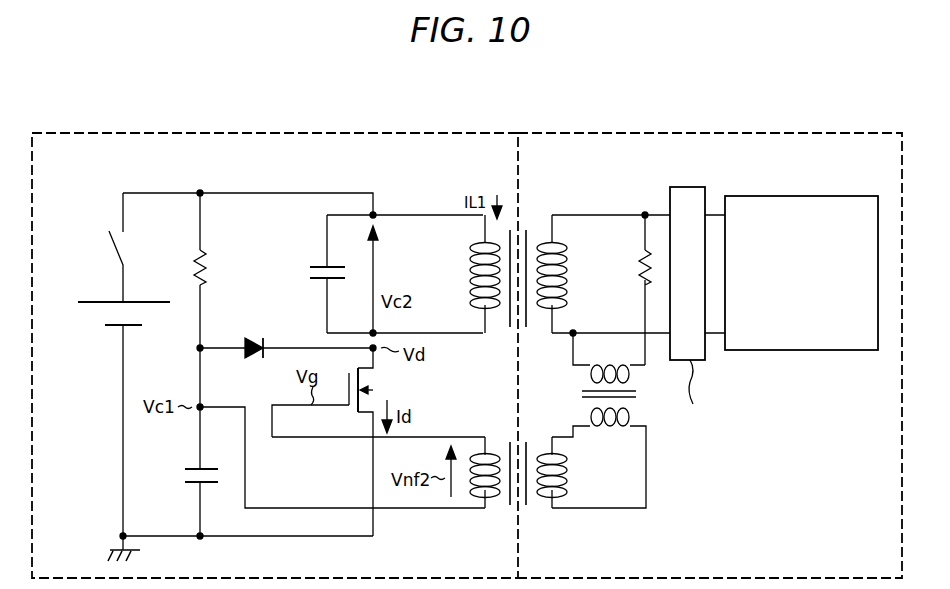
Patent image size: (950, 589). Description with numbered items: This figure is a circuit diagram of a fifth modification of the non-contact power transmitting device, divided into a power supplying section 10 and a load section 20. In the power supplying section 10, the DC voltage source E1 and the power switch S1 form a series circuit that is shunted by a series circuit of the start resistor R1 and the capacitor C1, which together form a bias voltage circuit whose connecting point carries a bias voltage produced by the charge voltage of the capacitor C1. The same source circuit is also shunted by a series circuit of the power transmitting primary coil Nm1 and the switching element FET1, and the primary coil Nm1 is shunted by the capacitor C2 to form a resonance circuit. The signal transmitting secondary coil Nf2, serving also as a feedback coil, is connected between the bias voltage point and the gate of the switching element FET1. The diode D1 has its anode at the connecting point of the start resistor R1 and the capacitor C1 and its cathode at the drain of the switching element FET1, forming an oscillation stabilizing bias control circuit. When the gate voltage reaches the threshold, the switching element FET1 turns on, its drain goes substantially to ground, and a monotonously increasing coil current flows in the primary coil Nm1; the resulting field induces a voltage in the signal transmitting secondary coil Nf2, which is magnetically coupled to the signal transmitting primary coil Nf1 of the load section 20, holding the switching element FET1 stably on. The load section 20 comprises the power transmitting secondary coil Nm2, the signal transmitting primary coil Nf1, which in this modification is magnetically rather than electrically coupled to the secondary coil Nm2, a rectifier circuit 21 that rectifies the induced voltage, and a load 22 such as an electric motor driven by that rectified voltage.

The power supplying section 10 is at (451, 131).
The load section 20 is at (883, 131).
The rectifier circuit 21 is at (686, 187).
The load 22 is at (803, 196).
The power switch S1 is at (108, 252).
The DC voltage source E1 is at (96, 325).
The start resistor R1 is at (212, 265).
The capacitor C1 is at (184, 475).
The capacitor C2 is at (308, 270).
The diode D1 is at (257, 337).
The switching element FET1 is at (380, 385).
The power transmitting primary coil Nm1 is at (490, 337).
The power transmitting secondary coil Nm2 is at (545, 337).
The signal transmitting primary coil Nf1 is at (545, 512).
The signal transmitting secondary coil Nf2 is at (490, 512).